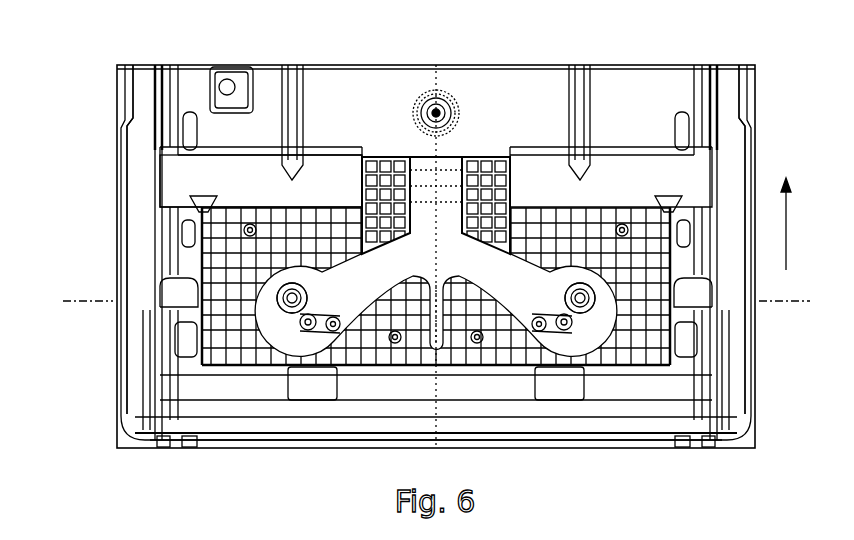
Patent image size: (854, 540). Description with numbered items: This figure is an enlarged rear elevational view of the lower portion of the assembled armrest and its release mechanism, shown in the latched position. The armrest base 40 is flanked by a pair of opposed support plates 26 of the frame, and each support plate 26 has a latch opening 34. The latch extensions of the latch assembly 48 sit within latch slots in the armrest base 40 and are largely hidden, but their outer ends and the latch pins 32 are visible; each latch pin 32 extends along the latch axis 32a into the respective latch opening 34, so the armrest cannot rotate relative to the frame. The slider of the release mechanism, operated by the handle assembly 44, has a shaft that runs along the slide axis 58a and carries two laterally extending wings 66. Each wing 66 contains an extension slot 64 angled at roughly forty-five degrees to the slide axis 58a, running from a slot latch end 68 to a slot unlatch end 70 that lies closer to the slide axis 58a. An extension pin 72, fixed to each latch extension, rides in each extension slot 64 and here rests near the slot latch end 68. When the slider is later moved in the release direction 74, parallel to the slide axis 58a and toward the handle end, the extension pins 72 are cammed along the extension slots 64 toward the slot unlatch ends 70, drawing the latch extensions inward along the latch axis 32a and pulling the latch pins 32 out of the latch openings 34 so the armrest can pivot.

The support plate 26 is at (137, 193).
The latch pin 32 is at (163, 302).
The latch axis 32a is at (77, 303).
The latch opening 34 is at (150, 300).
The armrest base 40 is at (625, 73).
The handle assembly 44 is at (203, 317).
The latch assembly 48 is at (333, 175).
The slide axis 58a is at (440, 432).
The extension slot 64 is at (305, 325).
The wing 66 is at (361, 277).
The slot latch end 68 is at (297, 287).
The slot unlatch end 70 is at (335, 333).
The extension pin 72 is at (287, 290).
The release direction 74 is at (790, 236).